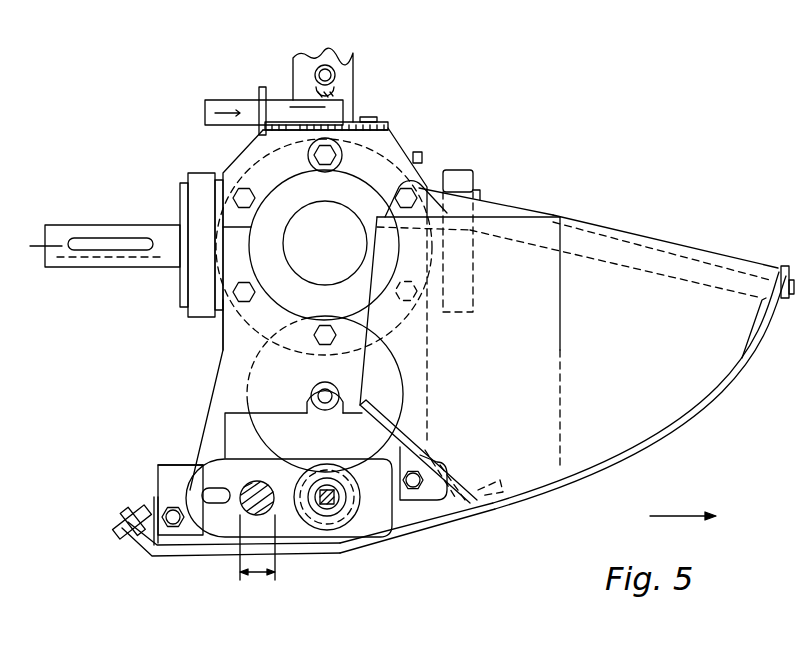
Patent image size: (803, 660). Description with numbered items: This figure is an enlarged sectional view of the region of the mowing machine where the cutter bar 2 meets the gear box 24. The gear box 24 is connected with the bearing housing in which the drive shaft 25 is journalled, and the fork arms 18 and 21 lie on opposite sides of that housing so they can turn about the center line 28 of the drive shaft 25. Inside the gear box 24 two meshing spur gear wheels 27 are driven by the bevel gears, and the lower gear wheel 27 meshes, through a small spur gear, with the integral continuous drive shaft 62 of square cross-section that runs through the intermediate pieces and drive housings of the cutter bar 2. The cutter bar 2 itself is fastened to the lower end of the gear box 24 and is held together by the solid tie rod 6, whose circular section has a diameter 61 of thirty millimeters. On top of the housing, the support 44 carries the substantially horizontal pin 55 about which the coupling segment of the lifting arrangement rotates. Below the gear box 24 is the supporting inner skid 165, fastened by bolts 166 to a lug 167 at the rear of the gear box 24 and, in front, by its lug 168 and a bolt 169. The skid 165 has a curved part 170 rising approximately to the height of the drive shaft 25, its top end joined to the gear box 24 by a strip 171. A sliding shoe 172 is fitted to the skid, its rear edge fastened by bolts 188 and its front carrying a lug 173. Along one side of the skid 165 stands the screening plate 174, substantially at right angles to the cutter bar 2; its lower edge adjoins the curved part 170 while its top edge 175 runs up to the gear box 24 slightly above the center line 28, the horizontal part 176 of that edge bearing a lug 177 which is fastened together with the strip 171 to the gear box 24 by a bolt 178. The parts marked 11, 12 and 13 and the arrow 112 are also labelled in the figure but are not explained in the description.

The cutter bar 2 is at (176, 466).
The tie rod 6 is at (252, 483).
The top wall of housing 11 is at (397, 118).
The cover plate 12 is at (383, 120).
The chamfered housing wall 13 is at (400, 143).
The fork arm 18 is at (198, 172).
The fork arm 21 is at (465, 170).
The gear box 24 is at (232, 363).
The drive shaft 25 is at (110, 228).
The spur gear wheels 27 is at (222, 331).
The center line 28 is at (57, 245).
The support 44 is at (335, 52).
The pin 55 is at (218, 100).
The diameter 61 is at (262, 576).
The drive shaft 62 is at (329, 512).
The direction of travel 112 is at (690, 502).
The inner skid 165 is at (400, 530).
The bolts 166 is at (167, 463).
The lug 167 is at (188, 464).
The lug 168 is at (433, 514).
The bolt 169 is at (418, 467).
The curved part 170 is at (713, 392).
The strip 171 is at (493, 203).
The sliding shoe 172 is at (175, 557).
The lug 173 is at (503, 478).
The screening plate 174 is at (617, 285).
The top edge 175 is at (523, 240).
The horizontal part 176 is at (553, 215).
The lug 177 is at (392, 175).
The bolt 178 is at (407, 197).
The bolts 188 is at (122, 532).